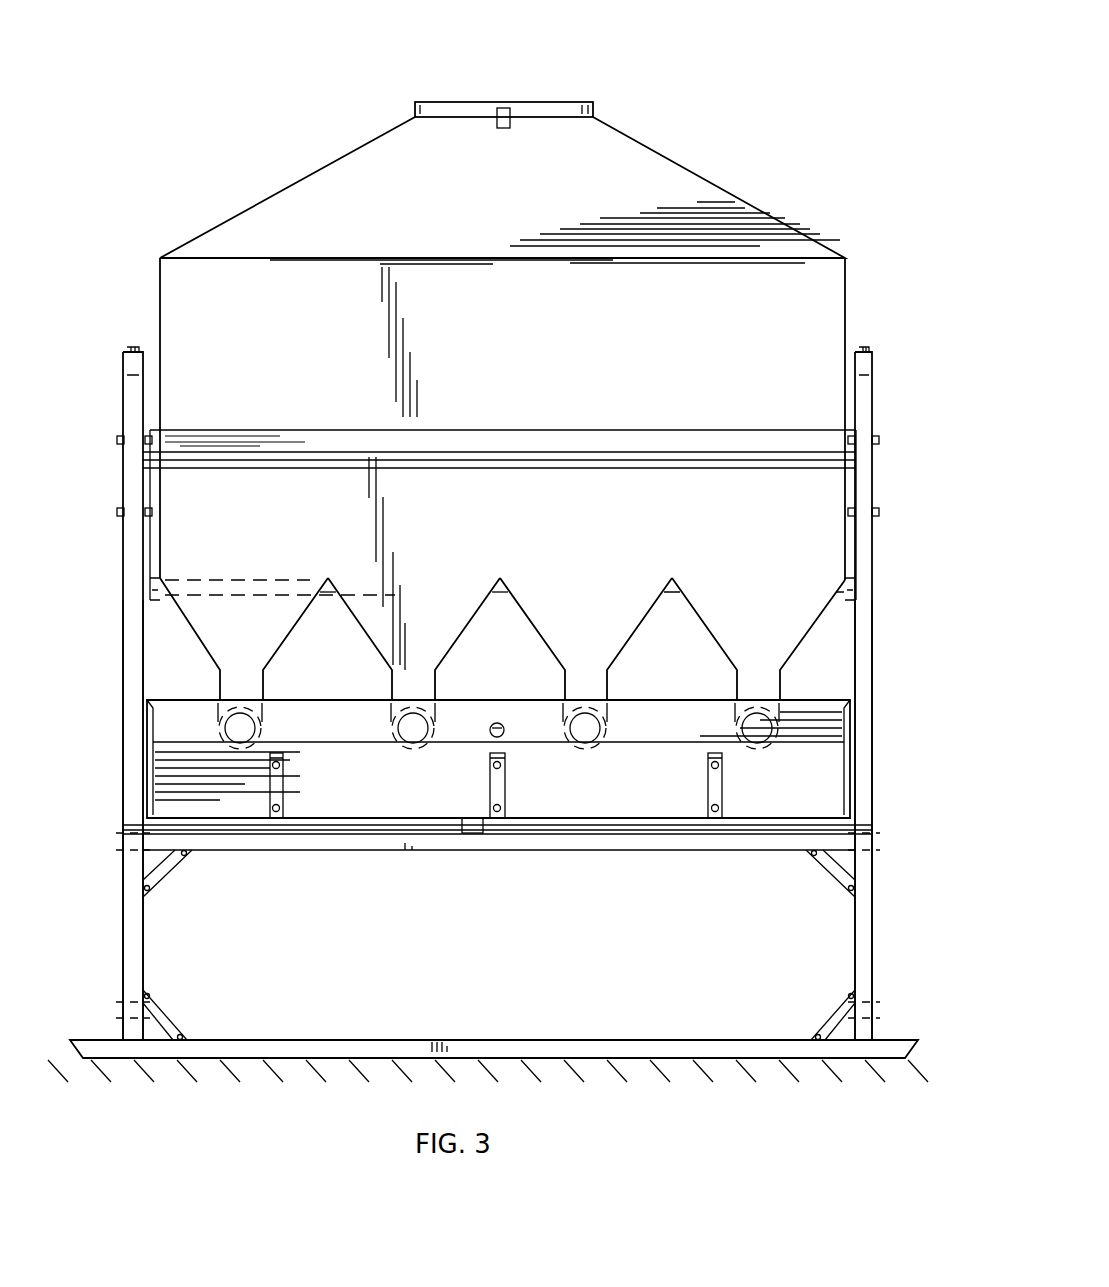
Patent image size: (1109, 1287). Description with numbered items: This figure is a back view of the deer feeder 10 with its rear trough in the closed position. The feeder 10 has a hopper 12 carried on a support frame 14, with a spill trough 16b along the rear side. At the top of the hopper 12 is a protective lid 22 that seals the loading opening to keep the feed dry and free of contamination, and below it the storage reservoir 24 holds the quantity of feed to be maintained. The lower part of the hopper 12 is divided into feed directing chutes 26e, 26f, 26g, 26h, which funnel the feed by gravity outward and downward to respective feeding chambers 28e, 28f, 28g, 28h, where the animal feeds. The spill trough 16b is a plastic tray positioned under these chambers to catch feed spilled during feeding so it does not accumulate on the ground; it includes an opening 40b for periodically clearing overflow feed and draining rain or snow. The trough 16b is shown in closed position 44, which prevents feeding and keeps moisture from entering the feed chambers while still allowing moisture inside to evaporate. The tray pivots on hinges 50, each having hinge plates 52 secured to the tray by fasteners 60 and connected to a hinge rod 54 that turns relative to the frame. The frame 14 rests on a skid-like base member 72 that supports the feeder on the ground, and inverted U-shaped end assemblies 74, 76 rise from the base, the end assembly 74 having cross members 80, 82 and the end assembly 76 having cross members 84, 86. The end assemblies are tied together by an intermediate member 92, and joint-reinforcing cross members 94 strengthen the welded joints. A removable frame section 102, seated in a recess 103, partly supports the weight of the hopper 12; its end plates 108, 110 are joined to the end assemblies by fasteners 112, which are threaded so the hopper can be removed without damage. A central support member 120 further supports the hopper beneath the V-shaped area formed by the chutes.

The deer feeder 10 is at (763, 88).
The hopper 12 is at (679, 158).
The support frame 14 is at (873, 591).
The spill trough 16b is at (651, 699).
The protective lid 22 is at (550, 108).
The storage reservoir 24 is at (822, 292).
The feed directing chute 26e is at (745, 604).
The feed directing chute 26f is at (601, 604).
The feed directing chute 26g is at (433, 600).
The feed directing chute 26h is at (259, 614).
The feeding chamber 28e is at (760, 746).
The feeding chamber 28f is at (587, 746).
The feeding chamber 28g is at (408, 724).
The feeding chamber 28h is at (236, 721).
The opening 40b is at (497, 722).
The closed position 44 is at (840, 691).
The hinge 50 is at (461, 834).
The hinge plate 52 is at (283, 786).
The hinge rod 54 is at (593, 836).
The fastener 60 is at (280, 808).
The base member 72 is at (585, 1042).
The inverted U-shaped end assembly 74 is at (864, 632).
The inverted U-shaped end assembly 76 is at (123, 681).
The cross member 80 is at (864, 845).
The cross member 82 is at (868, 1010).
The cross member 84 is at (122, 845).
The cross member 86 is at (118, 1010).
The intermediate member 92 is at (326, 851).
The joint-reinforcing cross member 94 is at (160, 872).
The removable frame section 102 is at (555, 455).
The recess 103 is at (667, 440).
The end plate 108 is at (852, 480).
The end plate 110 is at (152, 485).
The fastener 112 is at (118, 511).
The central support member 120 is at (160, 602).